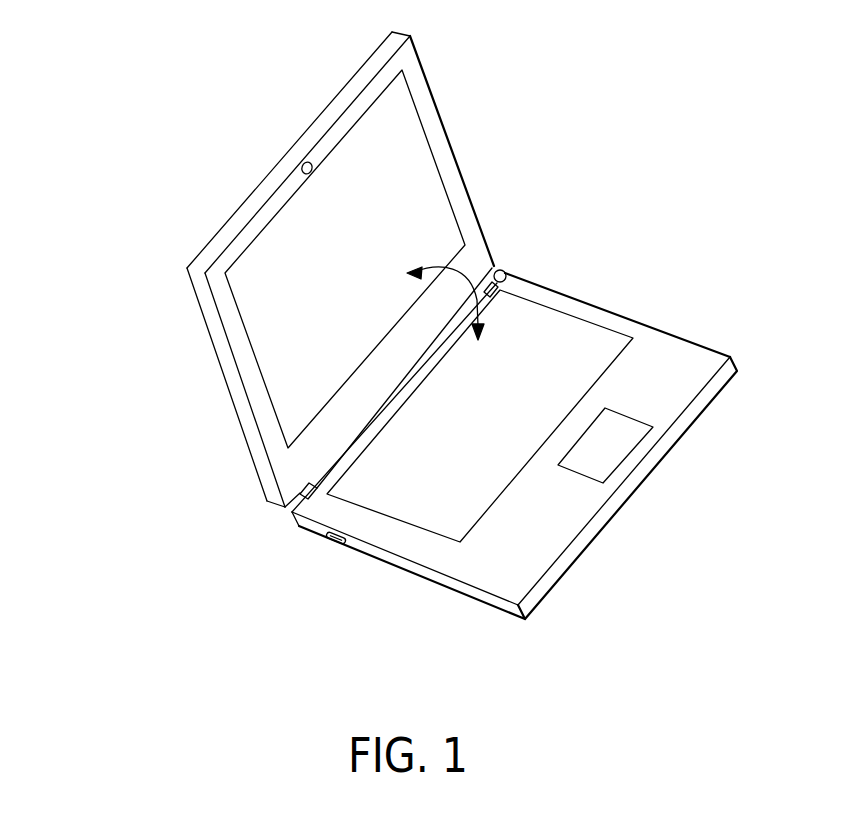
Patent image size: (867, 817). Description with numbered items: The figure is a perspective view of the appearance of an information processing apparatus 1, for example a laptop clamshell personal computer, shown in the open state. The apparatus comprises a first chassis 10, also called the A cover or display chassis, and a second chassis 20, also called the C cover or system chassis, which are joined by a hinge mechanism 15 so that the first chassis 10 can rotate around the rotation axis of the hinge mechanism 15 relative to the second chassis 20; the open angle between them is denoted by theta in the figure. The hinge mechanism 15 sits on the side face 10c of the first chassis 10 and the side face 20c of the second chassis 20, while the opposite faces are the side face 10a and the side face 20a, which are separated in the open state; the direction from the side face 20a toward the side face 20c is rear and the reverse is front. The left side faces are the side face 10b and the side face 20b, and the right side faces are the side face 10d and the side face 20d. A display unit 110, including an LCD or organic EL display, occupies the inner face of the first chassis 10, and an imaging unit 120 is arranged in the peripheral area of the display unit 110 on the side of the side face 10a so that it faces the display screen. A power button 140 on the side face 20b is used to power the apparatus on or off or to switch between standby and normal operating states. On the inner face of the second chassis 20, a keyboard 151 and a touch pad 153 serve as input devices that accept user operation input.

The information processing apparatus 1 is at (82, 97).
The first chassis 10 is at (170, 435).
The side face 10a is at (242, 217).
The side face 10b is at (220, 350).
The side face 10c is at (500, 268).
The side face 10d is at (440, 110).
The hinge mechanism 15 is at (322, 475).
The second chassis 20 is at (618, 577).
The side face 20a is at (718, 380).
The side face 20b is at (452, 580).
The side face 20c is at (293, 520).
The side face 20d is at (700, 340).
The display unit 110 is at (438, 217).
The imaging unit 120 is at (310, 162).
The power button 140 is at (335, 540).
The keyboard 151 is at (578, 347).
The touch pad 153 is at (620, 450).